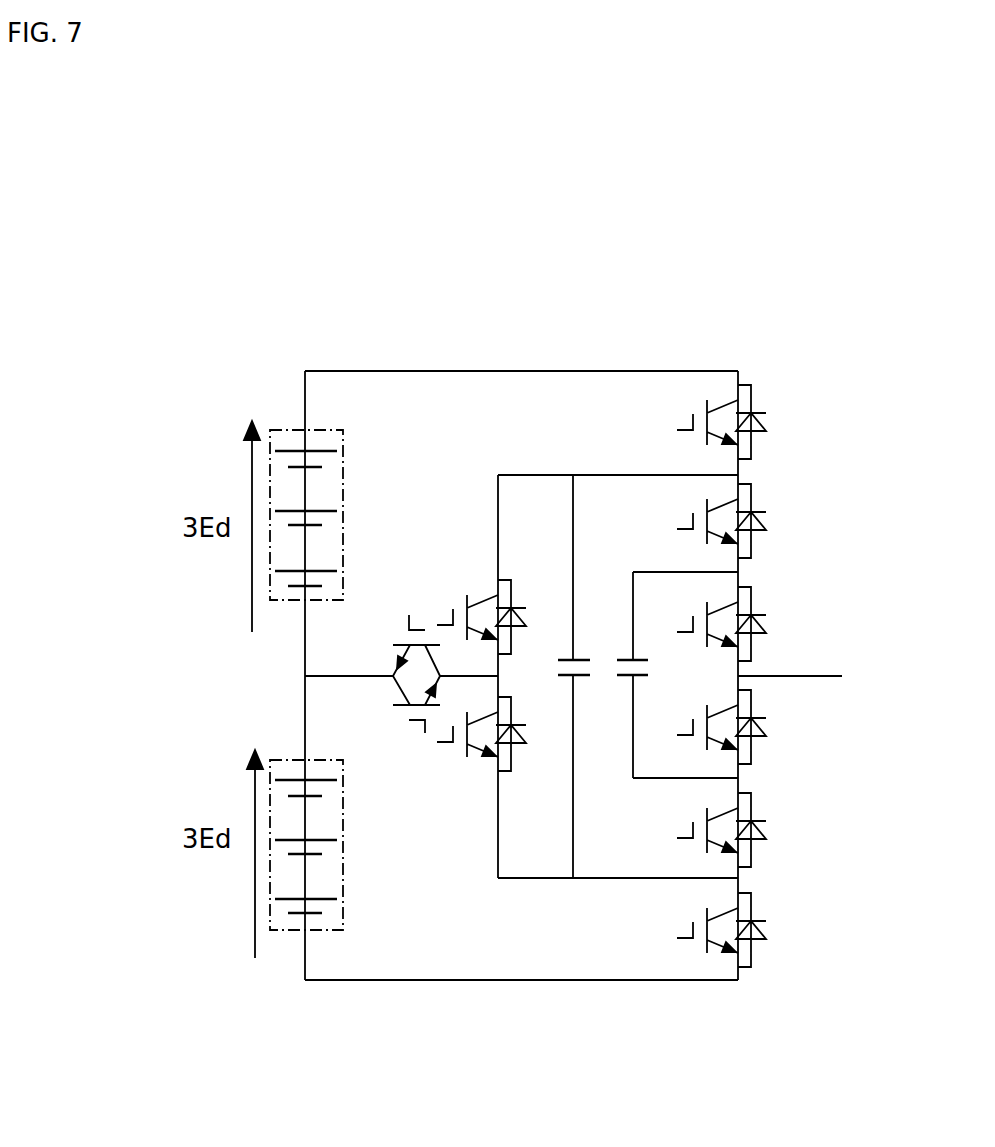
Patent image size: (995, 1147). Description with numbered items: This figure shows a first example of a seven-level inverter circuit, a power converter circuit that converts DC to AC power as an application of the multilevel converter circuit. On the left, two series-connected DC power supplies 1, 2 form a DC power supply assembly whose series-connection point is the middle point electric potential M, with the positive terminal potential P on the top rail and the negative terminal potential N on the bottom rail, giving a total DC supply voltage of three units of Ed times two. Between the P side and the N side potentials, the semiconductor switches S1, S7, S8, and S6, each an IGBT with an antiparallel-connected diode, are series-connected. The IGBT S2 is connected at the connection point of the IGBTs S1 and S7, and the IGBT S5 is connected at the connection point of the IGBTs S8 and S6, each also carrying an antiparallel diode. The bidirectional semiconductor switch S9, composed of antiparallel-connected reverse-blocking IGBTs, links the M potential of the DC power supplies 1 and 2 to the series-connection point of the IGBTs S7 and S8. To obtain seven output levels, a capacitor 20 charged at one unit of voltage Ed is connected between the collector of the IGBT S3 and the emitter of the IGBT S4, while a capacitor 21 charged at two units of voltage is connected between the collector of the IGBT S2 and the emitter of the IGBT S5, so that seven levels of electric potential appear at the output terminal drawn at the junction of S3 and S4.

The DC power supply 1 is at (306, 500).
The DC power supply 2 is at (306, 825).
The capacitor 20 is at (647, 684).
The capacitor 21 is at (587, 647).
The semiconductor switch S1 is at (741, 422).
The IGBT S2 is at (741, 521).
The IGBT S3 is at (741, 624).
The IGBT S4 is at (741, 727).
The IGBT S5 is at (741, 830).
The semiconductor switch S6 is at (741, 930).
The semiconductor switch S7 is at (487, 596).
The semiconductor switch S8 is at (487, 759).
The bidirectional semiconductor switch S9 is at (391, 674).